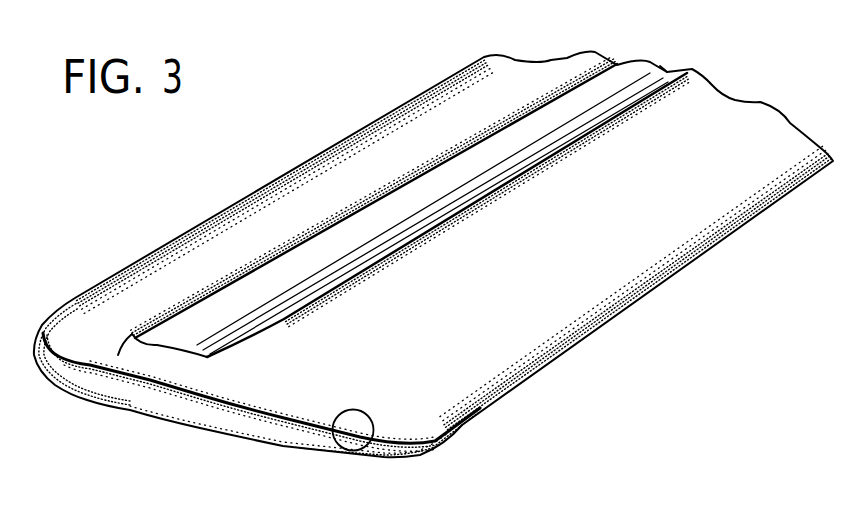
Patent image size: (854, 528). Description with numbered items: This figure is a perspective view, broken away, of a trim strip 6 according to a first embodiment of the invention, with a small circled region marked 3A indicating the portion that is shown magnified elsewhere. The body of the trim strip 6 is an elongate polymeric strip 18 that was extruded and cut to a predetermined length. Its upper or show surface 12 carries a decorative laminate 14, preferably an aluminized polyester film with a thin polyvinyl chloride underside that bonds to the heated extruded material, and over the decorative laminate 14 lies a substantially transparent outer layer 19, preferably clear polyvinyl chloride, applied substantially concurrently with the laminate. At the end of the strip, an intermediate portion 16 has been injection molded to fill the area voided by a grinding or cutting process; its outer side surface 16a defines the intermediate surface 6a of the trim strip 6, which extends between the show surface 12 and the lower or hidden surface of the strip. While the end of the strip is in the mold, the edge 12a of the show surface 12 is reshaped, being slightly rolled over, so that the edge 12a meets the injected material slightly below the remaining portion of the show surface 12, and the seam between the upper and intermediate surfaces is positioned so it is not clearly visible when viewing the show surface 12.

The trim strip 6 is at (691, 279).
The intermediate surface 6a is at (80, 382).
The upper or show surface 12 is at (361, 140).
The edge of the show surface 12a is at (77, 347).
The decorative laminate 14 is at (623, 68).
The intermediate portion 16 is at (381, 445).
The outer side surface 16a is at (160, 409).
The polymeric strip 18 is at (547, 305).
The transparent outer layer 19 is at (663, 70).
The detail region of FIG. 3A is at (333, 435).